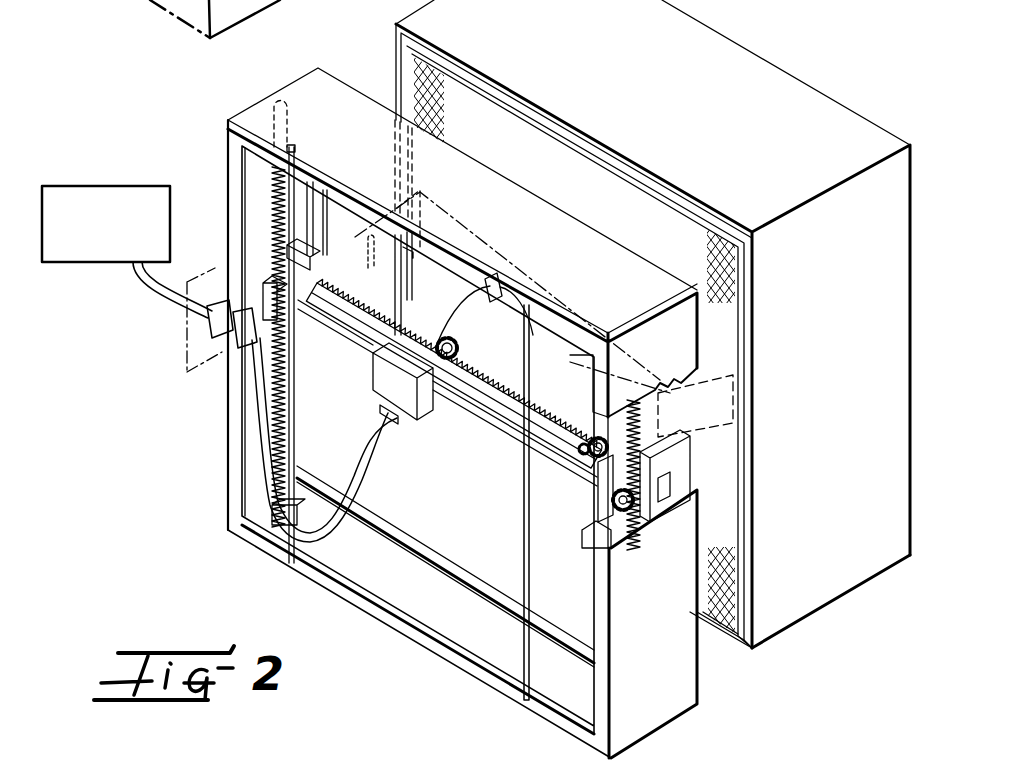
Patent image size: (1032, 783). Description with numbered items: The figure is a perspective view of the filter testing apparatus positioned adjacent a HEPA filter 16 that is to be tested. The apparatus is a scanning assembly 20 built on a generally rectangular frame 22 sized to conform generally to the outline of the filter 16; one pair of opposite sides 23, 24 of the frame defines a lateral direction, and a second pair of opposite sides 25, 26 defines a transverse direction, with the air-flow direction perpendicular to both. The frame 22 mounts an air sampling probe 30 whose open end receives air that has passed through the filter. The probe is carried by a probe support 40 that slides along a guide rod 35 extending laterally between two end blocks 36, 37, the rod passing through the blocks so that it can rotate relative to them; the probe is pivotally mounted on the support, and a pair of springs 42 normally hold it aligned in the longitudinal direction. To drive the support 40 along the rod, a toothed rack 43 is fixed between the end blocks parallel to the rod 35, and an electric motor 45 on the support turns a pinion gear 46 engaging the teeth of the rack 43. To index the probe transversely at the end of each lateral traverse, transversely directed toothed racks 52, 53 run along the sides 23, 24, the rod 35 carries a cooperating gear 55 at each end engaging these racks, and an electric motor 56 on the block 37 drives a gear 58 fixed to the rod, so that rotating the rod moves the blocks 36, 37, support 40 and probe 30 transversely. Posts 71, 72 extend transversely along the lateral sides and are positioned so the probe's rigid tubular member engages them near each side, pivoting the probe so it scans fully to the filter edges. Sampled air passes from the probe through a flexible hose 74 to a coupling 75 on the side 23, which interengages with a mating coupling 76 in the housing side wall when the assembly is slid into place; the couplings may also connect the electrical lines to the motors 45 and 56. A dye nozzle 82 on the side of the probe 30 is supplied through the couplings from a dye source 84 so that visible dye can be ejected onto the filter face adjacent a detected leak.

The HEPA filter 16 is at (716, 88).
The scanning assembly 20 is at (210, 143).
The frame 22 is at (317, 114).
The side of frame 23 is at (255, 181).
The side of frame 24 is at (635, 640).
The side of frame 25 is at (535, 217).
The side of frame 26 is at (426, 614).
The air sampling probe 30 is at (487, 292).
The guide rod 35 is at (357, 352).
The end block 36 is at (321, 254).
The end block 37 is at (684, 470).
The probe support 40 is at (430, 418).
The springs 42 is at (383, 405).
The toothed rack 43 is at (392, 312).
The electric motor 45 is at (420, 318).
The pinion gear 46 is at (456, 327).
The toothed rack 52 is at (277, 219).
The toothed rack 53 is at (637, 528).
The cooperating gear 55 is at (278, 262).
The electric motor 56 is at (606, 440).
The gear 58 is at (576, 478).
The post 71 is at (286, 551).
The post 72 is at (527, 653).
The flexible hose 74 is at (337, 532).
The coupling 75 is at (187, 355).
The mating coupling 76 is at (200, 338).
The dye nozzle 82 is at (565, 293).
The dye source 84 is at (116, 186).